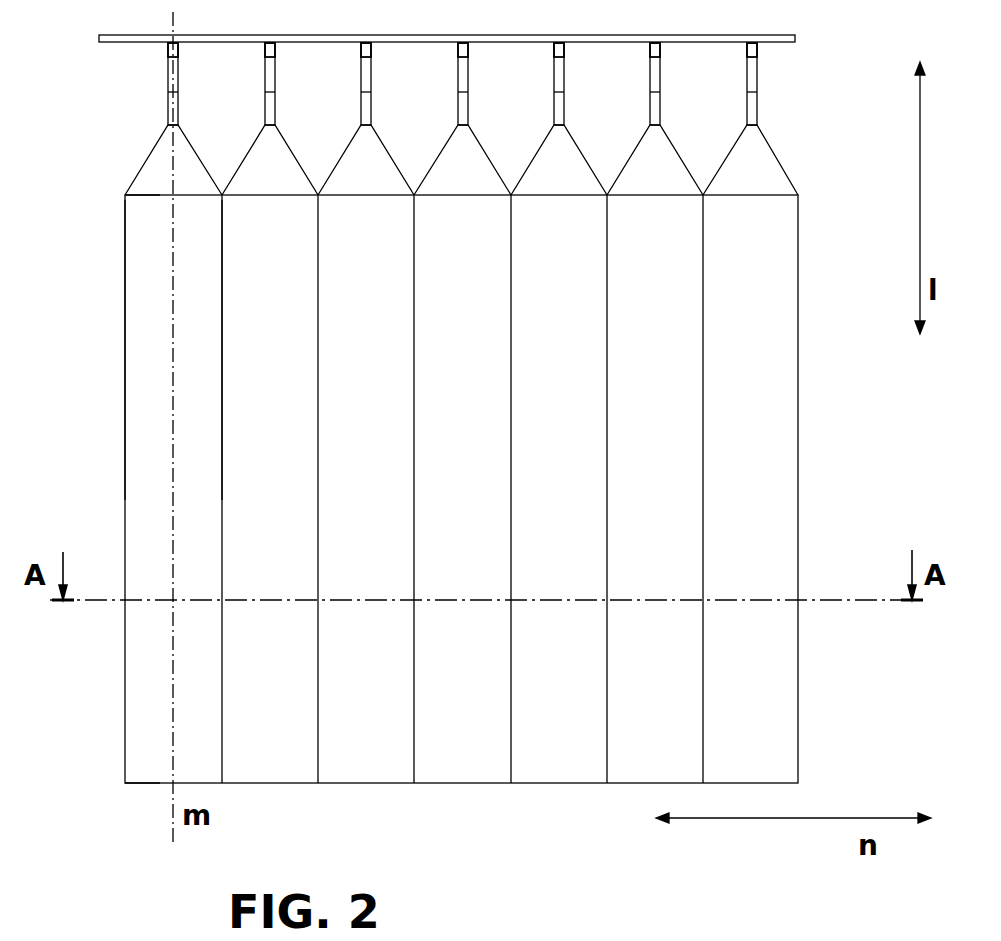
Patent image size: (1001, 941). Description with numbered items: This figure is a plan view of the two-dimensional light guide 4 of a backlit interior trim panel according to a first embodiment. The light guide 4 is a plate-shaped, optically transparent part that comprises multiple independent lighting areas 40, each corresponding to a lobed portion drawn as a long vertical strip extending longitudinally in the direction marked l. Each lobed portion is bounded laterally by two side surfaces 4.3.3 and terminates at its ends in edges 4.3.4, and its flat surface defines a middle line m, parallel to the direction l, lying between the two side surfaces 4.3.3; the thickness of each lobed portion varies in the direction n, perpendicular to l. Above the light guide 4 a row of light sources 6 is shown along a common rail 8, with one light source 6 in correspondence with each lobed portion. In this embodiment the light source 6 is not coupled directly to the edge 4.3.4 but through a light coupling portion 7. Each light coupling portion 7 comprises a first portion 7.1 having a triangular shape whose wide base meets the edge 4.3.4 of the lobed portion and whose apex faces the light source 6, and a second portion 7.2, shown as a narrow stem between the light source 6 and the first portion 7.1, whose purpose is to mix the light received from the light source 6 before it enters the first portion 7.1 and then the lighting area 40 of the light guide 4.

The mounting rail 8 is at (815, 24).
The light source 6 is at (661, 50).
The light coupling portion 7 is at (478, 119).
The first portion 7.1 is at (568, 157).
The second portion 7.2 is at (556, 101).
The two-dimensional light guide 4 is at (836, 424).
The independent lighting areas 40 is at (578, 367).
The side surfaces 4.3.3 is at (222, 362).
The edges 4.3.4 is at (150, 194).